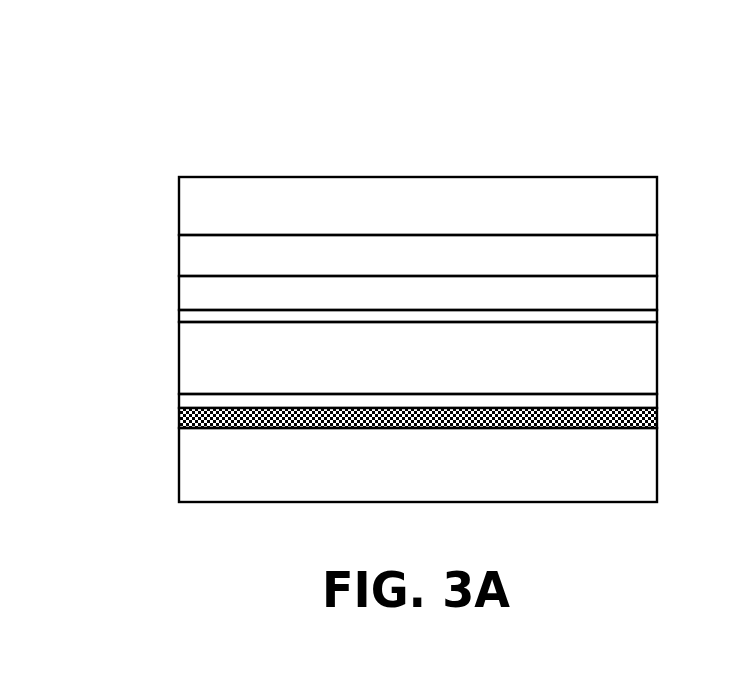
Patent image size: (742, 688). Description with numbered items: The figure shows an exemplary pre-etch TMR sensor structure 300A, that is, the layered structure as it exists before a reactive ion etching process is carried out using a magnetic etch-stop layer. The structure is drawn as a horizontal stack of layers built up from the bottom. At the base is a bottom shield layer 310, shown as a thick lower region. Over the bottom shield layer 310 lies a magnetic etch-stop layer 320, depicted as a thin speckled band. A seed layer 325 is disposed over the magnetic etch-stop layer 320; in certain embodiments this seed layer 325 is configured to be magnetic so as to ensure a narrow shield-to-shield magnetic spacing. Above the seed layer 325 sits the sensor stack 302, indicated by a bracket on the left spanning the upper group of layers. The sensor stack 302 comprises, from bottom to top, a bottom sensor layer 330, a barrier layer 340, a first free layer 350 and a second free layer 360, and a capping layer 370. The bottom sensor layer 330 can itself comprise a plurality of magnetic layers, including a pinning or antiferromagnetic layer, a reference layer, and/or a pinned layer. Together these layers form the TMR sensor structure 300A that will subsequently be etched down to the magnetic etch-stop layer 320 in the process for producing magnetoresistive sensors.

The pre-etch TMR sensor structure 300A is at (458, 133).
The sensor stack 302 is at (157, 180).
The bottom shield layer 310 is at (668, 457).
The magnetic etch-stop layer 320 is at (668, 420).
The seed layer 325 is at (652, 400).
The bottom sensor layer 330 is at (668, 358).
The barrier layer 340 is at (668, 323).
The first free layer 350 is at (668, 288).
The second free layer 360 is at (668, 255).
The capping layer 370 is at (668, 218).